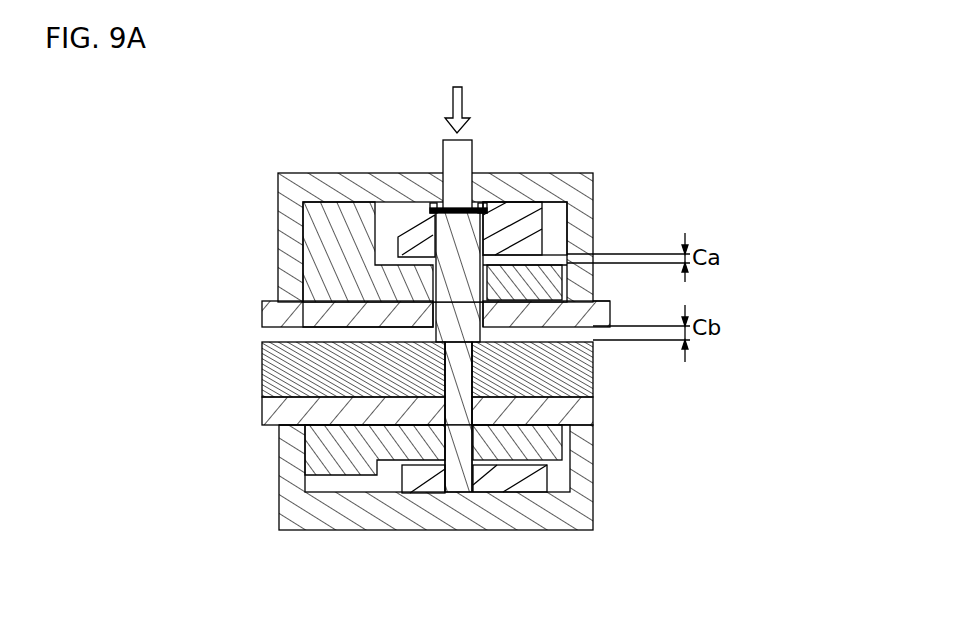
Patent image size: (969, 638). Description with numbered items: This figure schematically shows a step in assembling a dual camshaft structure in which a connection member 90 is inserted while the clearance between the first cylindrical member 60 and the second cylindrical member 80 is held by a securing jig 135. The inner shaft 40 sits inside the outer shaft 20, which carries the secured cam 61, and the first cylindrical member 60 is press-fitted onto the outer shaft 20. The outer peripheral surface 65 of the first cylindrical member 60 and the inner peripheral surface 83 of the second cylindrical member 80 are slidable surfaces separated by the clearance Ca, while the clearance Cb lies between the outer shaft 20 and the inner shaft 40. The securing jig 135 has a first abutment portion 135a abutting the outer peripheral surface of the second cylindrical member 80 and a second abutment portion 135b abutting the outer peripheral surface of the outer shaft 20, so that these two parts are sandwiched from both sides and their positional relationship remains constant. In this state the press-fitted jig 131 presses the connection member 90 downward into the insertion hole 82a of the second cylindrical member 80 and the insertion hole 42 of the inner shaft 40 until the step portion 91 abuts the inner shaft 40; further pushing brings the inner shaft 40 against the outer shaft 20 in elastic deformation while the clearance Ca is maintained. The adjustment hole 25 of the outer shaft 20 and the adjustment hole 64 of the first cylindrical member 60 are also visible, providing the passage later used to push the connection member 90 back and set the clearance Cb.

The outer shaft 20 is at (262, 306).
The adjustment hole 25 is at (482, 412).
The inner shaft 40 is at (290, 370).
The insertion hole 42 is at (473, 388).
The first cylindrical member 60 is at (337, 285).
The secured cam 61 is at (332, 227).
The adjustment hole 64 is at (478, 446).
The outer peripheral surface 65 is at (520, 290).
The second cylindrical member 80 is at (555, 212).
The insertion hole 82a is at (423, 237).
The inner peripheral surface 83 is at (500, 262).
The connection member 90 is at (443, 214).
The step portion 91 is at (478, 352).
The press-fitted jig 131 is at (472, 142).
The securing jig 135 is at (593, 172).
The first abutment portion 135a is at (528, 222).
The second abutment portion 135b is at (600, 306).